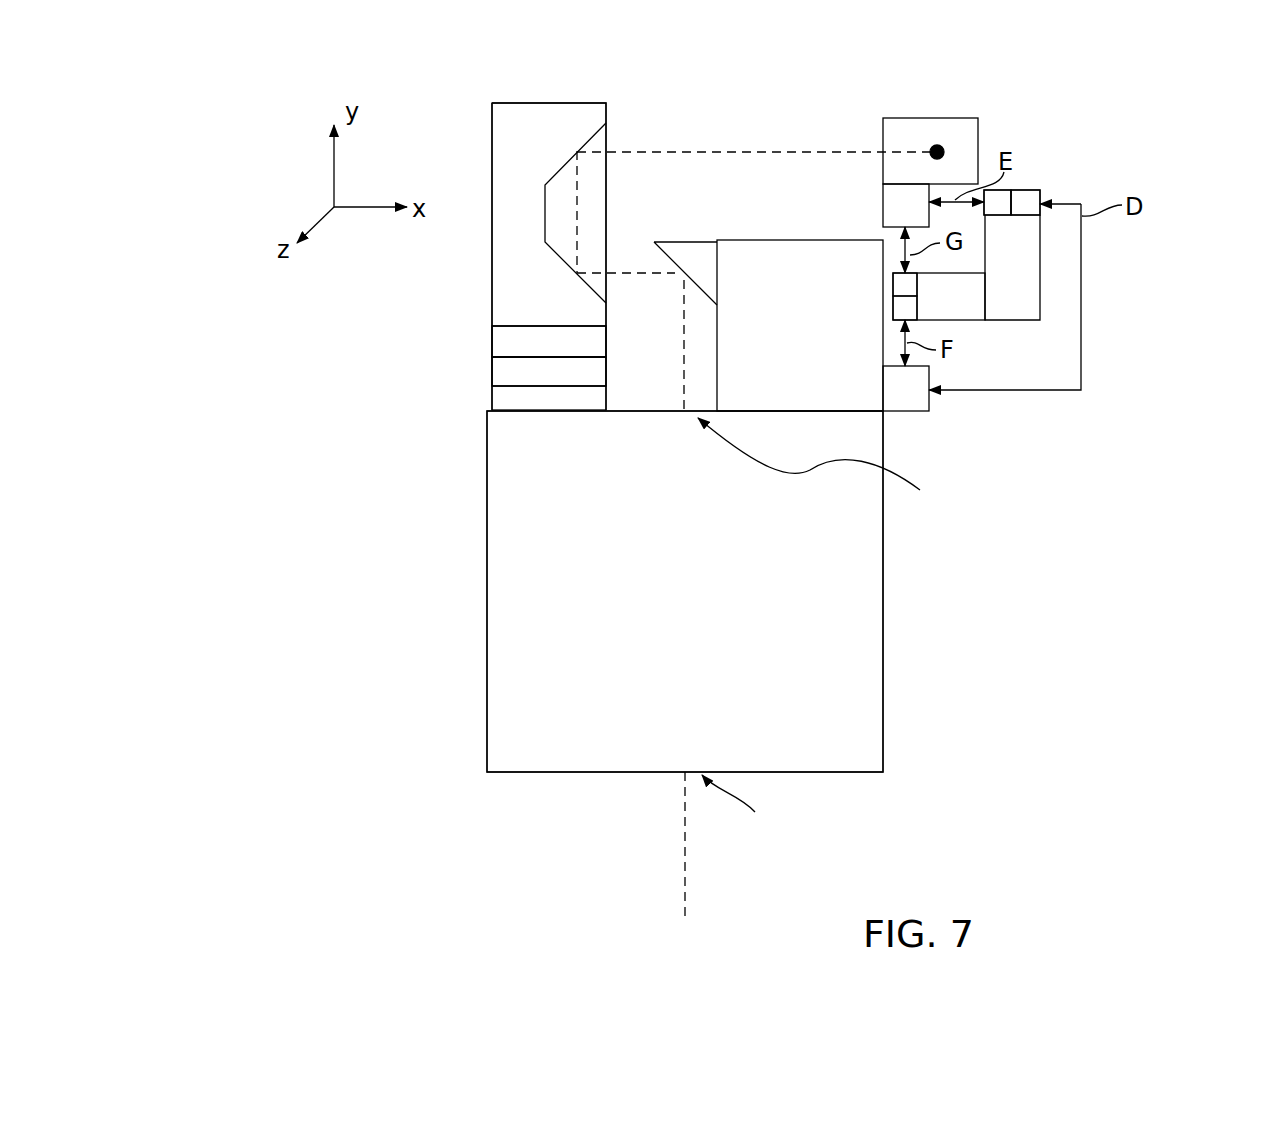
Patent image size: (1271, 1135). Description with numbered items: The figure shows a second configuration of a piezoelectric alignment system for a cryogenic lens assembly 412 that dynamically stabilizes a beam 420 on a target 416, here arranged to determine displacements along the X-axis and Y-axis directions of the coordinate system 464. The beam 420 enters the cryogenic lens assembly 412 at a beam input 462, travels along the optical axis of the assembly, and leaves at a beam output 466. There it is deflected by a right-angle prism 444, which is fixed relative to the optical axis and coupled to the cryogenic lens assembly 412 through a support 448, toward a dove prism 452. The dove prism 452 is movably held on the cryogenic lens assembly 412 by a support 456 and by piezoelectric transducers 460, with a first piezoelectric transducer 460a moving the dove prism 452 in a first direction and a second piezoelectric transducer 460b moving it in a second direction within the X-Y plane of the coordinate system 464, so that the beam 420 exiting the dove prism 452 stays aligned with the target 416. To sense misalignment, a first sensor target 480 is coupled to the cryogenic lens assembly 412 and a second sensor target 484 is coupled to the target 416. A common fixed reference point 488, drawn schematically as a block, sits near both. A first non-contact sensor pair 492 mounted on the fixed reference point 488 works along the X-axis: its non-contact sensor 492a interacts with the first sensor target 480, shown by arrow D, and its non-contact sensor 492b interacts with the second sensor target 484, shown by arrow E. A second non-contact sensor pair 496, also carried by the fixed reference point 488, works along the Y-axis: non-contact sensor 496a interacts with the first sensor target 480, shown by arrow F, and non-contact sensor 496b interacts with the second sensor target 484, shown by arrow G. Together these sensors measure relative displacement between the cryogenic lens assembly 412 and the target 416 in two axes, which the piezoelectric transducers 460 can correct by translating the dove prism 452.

The cryogenic lens assembly 412 is at (885, 652).
The target 416 is at (965, 138).
The beam 420 is at (686, 862).
The right-angle prism 444 is at (692, 258).
The support 448 is at (821, 339).
The dove prism 452 is at (608, 133).
The support 456 is at (528, 125).
The piezoelectric transducers 460 is at (366, 295).
The first piezoelectric transducer 460a is at (510, 336).
The second piezoelectric transducer 460b is at (510, 370).
The beam input 462 is at (757, 801).
The coordinate system 464 is at (265, 125).
The beam output 466 is at (838, 467).
The first sensor target 480 is at (905, 412).
The second sensor target 484 is at (884, 200).
The fixed reference point 488 is at (1041, 250).
The first non-contact sensor pair 492 is at (1132, 123).
The non-contact sensor 492a is at (1022, 197).
The non-contact sensor 492b is at (1003, 197).
The second non-contact sensor pair 496 is at (1172, 270).
The non-contact sensor 496a is at (918, 308).
The non-contact sensor 496b is at (918, 287).